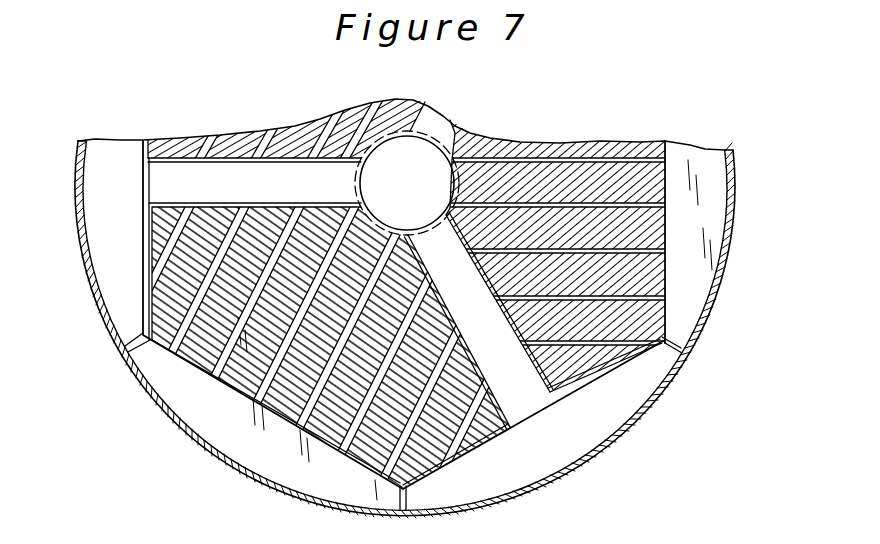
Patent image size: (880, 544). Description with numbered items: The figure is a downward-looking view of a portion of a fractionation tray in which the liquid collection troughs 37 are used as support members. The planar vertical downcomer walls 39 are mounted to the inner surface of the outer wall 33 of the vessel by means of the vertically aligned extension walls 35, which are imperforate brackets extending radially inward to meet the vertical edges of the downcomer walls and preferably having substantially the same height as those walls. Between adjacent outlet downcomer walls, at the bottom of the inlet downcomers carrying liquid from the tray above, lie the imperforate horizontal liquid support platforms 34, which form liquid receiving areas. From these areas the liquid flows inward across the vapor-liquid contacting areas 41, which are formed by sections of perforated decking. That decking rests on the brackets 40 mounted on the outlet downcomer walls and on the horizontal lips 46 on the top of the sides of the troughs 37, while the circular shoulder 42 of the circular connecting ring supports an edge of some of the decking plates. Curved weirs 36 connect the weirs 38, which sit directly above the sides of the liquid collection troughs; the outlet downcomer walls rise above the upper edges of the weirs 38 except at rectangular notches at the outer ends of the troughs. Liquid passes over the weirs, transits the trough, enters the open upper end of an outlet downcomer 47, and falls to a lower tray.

The outer wall 33 is at (186, 436).
The horizontal liquid support platform 34 is at (313, 470).
The extension wall 35 is at (133, 340).
The curved weir 36 is at (447, 173).
The liquid collection trough 37 is at (153, 182).
The weir 38 is at (250, 203).
The downcomer wall 39 is at (140, 253).
The bracket 40 is at (153, 237).
The vapor-liquid contacting area 41 is at (334, 133).
The circular shoulder 42 is at (440, 200).
The horizontal lip 46 is at (237, 153).
The outlet downcomer 47 is at (100, 196).